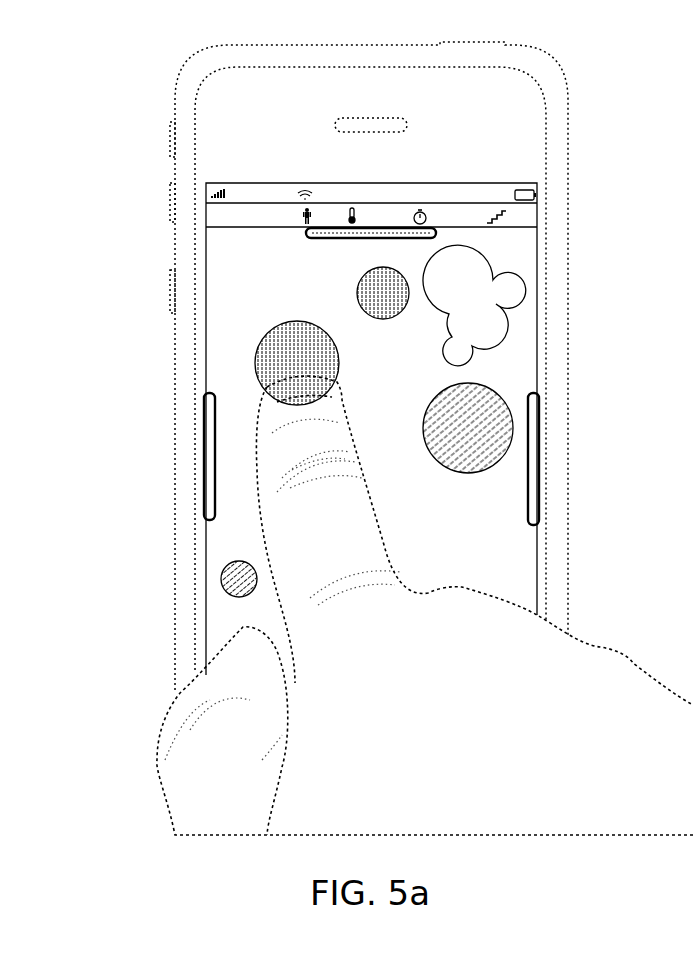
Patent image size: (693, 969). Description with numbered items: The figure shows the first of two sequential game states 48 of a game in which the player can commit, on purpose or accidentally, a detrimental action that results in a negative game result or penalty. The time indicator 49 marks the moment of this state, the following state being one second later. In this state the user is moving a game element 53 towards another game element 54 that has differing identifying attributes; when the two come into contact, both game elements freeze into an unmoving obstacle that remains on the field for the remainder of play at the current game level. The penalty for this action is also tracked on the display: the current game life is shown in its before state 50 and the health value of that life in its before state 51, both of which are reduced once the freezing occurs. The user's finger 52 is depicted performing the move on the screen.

The game state 48 is at (237, 250).
The time indicator 49 is at (442, 205).
The game life before state 50 is at (315, 215).
The health value before state 51 is at (373, 208).
The user finger 52 is at (318, 440).
The game element 53 is at (288, 362).
The game element 54 is at (470, 425).